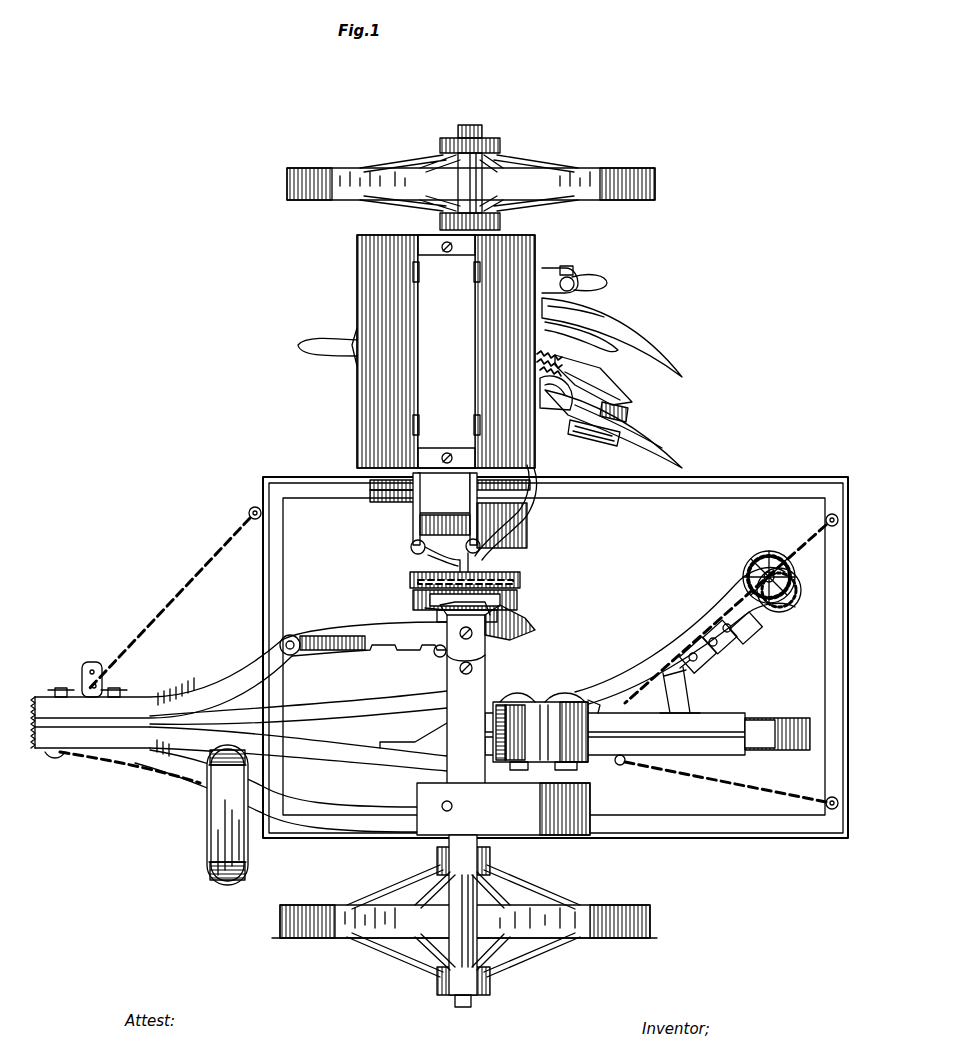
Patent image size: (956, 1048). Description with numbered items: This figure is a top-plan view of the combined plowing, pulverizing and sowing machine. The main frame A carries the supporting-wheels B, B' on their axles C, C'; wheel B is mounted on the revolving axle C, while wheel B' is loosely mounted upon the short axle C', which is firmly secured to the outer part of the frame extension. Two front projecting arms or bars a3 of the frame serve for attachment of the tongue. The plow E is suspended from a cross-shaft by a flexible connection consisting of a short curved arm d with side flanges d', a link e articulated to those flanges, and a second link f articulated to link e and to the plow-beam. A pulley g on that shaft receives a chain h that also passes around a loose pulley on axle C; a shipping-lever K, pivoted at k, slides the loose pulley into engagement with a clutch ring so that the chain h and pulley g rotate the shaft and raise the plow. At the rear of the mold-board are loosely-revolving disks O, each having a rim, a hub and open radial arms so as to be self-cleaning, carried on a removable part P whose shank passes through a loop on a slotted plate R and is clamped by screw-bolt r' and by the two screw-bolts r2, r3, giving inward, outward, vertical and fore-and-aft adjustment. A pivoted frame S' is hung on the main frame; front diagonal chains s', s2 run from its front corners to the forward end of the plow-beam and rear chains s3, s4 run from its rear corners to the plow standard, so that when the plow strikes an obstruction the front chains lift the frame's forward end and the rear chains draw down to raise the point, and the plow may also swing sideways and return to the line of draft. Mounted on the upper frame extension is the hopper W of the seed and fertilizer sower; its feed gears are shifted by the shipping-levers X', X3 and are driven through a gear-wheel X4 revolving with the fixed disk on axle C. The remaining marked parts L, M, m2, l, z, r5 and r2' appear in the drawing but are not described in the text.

The supporting-wheel B' is at (471, 184).
The short axle C' is at (483, 128).
The hopper W is at (416, 351).
The screw-bolt r2 is at (641, 475).
The spring r5 is at (566, 350).
The cutter blade holder r2' is at (593, 380).
The screw-bolt r3 is at (660, 436).
The screw-bolt r' is at (556, 410).
The frame S' is at (548, 657).
The shipping-lever X' is at (450, 510).
The shipping-lever X3 is at (411, 540).
The gear-wheel X4 is at (530, 498).
The shipping-lever K is at (500, 555).
The chain h is at (520, 584).
The pulley g is at (518, 602).
The main frame A is at (503, 725).
The upper pivot bearing L is at (465, 622).
The collar M is at (466, 664).
The arm bracket m2 is at (520, 634).
The latch l is at (432, 615).
The pin z is at (432, 656).
The front projecting arms a3 is at (241, 716).
The plow E is at (420, 669).
The pivot k is at (675, 683).
The link e is at (540, 732).
The curved arm d is at (501, 732).
The side flanges d' is at (542, 731).
The link f is at (596, 715).
The diagonal chain s2 is at (140, 772).
The diagonal chain s' is at (169, 604).
The diagonal chain s3 is at (725, 614).
The diagonal chain s4 is at (712, 780).
The revolving disks O is at (795, 572).
The removable part P is at (732, 633).
The plate R is at (705, 675).
The supporting-wheel B is at (464, 915).
The revolving axle C is at (474, 1004).